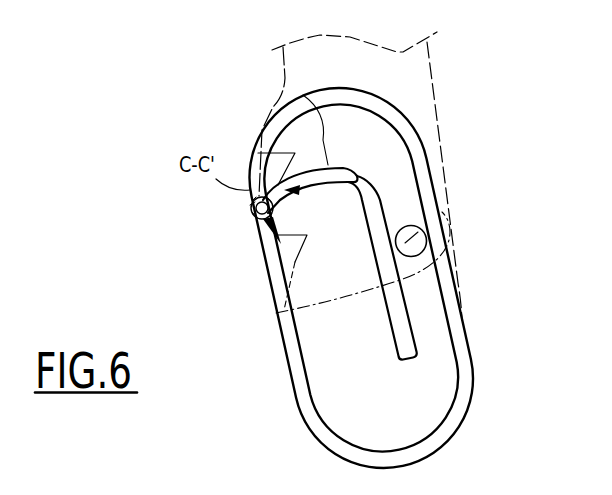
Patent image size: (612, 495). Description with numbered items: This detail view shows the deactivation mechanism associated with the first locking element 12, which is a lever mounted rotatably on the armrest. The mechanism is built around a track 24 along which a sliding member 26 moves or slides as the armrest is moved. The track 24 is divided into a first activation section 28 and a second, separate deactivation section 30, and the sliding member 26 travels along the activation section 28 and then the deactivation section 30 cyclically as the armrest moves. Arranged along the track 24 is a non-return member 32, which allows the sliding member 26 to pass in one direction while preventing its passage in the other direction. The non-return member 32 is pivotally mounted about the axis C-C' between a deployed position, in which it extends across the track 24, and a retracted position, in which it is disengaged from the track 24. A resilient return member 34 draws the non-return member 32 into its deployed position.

The first locking element 12 is at (438, 127).
The track 24 is at (420, 421).
The sliding member 26 is at (424, 228).
The activation section 28 is at (323, 333).
The deactivation section 30 is at (428, 323).
The non-return member 32 is at (288, 113).
The resilient return member 34 is at (257, 226).